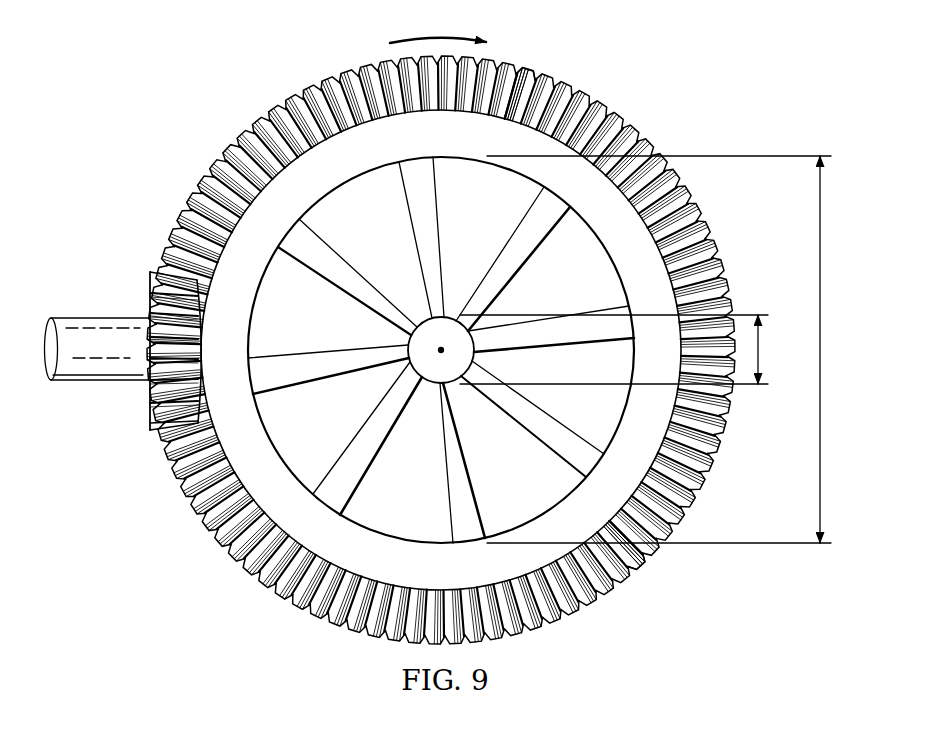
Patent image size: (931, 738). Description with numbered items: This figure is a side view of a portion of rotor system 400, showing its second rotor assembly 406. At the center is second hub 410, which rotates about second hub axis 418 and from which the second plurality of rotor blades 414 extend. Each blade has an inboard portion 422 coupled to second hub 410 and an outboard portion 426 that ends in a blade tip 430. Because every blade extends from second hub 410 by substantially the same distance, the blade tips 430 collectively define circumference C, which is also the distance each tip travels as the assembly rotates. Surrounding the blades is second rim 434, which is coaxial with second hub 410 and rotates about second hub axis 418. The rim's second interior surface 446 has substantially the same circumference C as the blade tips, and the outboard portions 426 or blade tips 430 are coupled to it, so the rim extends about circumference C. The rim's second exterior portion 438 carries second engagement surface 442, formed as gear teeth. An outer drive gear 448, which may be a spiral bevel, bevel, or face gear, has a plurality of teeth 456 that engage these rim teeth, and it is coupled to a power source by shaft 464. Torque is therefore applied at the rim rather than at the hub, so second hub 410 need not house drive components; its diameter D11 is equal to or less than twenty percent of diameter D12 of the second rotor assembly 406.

The rotor system 400 is at (442, 359).
The second rotor assembly 406 is at (442, 359).
The second engagement surface 442 is at (548, 92).
The second rim 434 is at (624, 110).
The outboard portion 426 is at (312, 222).
The blade tip 430 is at (421, 163).
The second plurality of rotor blades 414 is at (528, 249).
The inboard portion 422 is at (404, 300).
The second hub axis 418 is at (442, 352).
The second hub 410 is at (409, 366).
The circumference C is at (275, 431).
The second exterior portion 438 is at (342, 570).
The second interior surface 446 is at (400, 531).
The outer drive gear 448 is at (136, 335).
The plurality of teeth 456 is at (160, 397).
The shaft 464 is at (82, 317).
The diameter of second hub D11 is at (629, 349).
The diameter of second rotor assembly D12 is at (663, 349).